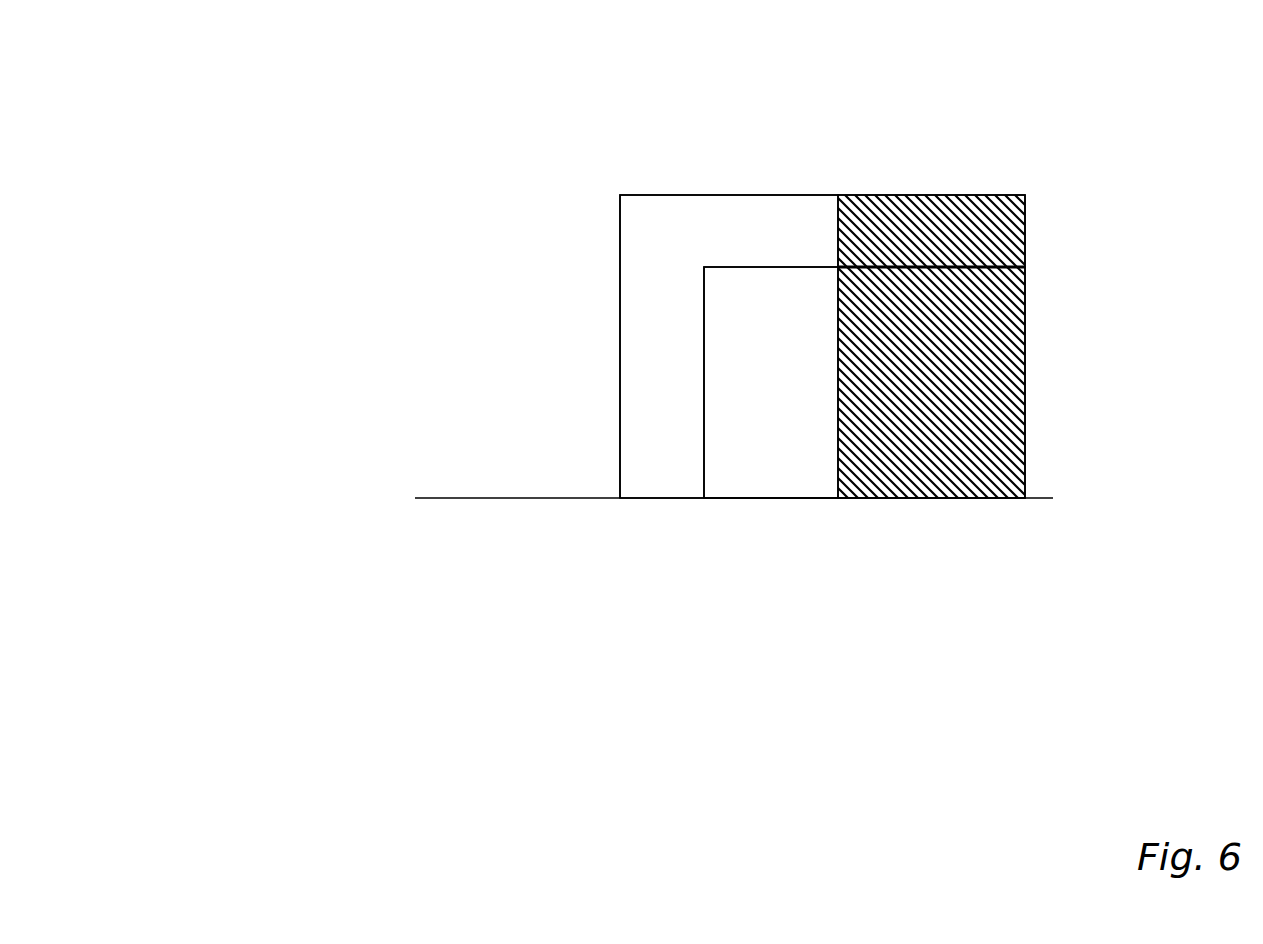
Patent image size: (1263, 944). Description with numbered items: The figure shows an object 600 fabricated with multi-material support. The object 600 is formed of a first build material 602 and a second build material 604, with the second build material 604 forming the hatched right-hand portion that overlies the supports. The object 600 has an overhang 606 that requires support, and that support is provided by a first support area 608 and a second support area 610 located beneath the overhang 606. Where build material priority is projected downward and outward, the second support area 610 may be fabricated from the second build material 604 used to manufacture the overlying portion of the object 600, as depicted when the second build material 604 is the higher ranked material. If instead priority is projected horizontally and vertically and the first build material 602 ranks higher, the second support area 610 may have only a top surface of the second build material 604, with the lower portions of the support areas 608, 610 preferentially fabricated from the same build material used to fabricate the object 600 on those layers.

The object 600 is at (332, 127).
The first build material 602 is at (717, 195).
The second build material 604 is at (893, 195).
The overhang 606 is at (1025, 570).
The first support area 608 is at (742, 498).
The second support area 610 is at (917, 498).